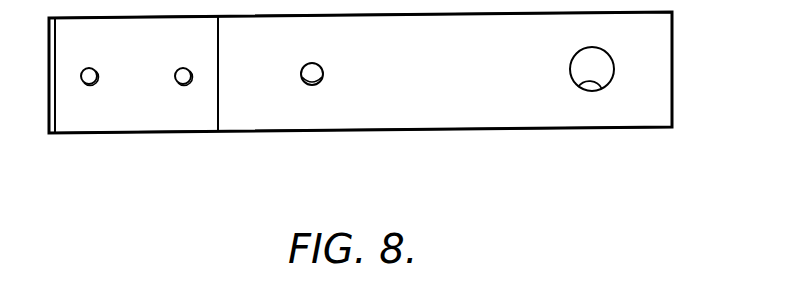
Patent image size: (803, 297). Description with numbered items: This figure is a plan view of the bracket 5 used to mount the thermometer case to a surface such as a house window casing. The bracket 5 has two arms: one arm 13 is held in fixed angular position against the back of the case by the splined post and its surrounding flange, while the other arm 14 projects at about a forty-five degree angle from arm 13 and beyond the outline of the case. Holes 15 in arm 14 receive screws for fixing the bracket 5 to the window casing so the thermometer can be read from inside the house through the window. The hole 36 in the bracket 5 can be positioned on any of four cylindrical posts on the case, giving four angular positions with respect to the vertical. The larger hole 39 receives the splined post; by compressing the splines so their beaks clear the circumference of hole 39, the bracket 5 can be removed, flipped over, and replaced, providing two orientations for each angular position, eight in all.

The bracket 5 is at (402, 131).
The arm 13 is at (432, 58).
The arm 14 is at (132, 63).
The holes 15 is at (81, 84).
The hole 36 is at (302, 83).
The hole 39 is at (577, 87).